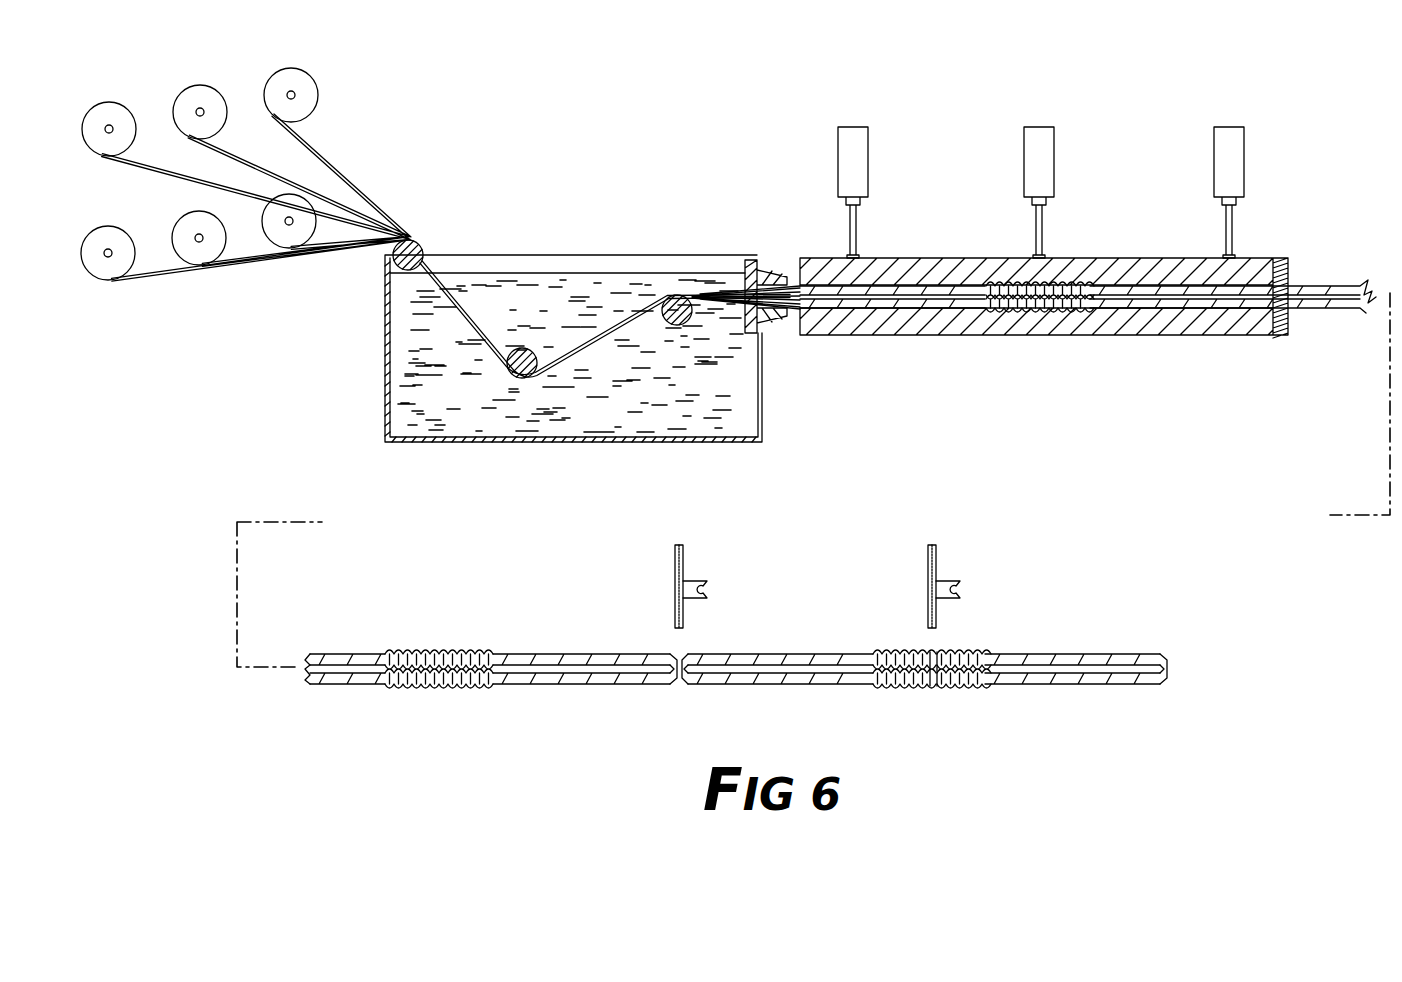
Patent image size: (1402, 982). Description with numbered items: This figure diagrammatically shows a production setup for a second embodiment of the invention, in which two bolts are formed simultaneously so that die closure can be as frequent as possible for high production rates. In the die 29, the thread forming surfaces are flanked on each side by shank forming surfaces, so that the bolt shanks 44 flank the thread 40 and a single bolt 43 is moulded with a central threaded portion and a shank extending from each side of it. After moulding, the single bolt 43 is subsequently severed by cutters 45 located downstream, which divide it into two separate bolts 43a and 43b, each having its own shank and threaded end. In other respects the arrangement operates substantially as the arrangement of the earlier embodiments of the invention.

The die 29 is at (1108, 238).
The thread 40 is at (952, 687).
The single bolt 43 is at (1057, 372).
The bolt 43a is at (795, 652).
The bolt 43b is at (1104, 652).
The bolt shanks 44 is at (1055, 672).
The cutters 45 is at (936, 560).